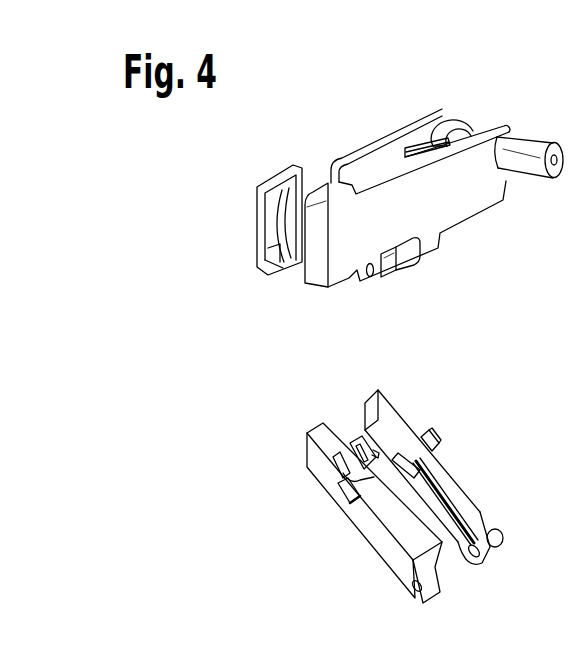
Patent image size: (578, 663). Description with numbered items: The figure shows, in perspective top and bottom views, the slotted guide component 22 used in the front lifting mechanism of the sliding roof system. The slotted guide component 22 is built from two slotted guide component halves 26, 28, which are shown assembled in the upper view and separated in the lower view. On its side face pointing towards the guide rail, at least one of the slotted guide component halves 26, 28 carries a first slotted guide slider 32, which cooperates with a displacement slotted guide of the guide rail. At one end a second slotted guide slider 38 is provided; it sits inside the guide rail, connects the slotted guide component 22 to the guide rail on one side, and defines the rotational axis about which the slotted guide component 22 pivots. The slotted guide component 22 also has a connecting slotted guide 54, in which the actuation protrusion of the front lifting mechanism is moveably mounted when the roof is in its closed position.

The slotted guide component 22 is at (314, 144).
The slotted guide component half 26 is at (372, 165).
The slotted guide component half 28 is at (475, 202).
The first slotted guide slider 32 is at (410, 258).
The second slotted guide slider 38 is at (530, 150).
The connecting slotted guide 54 is at (350, 470).